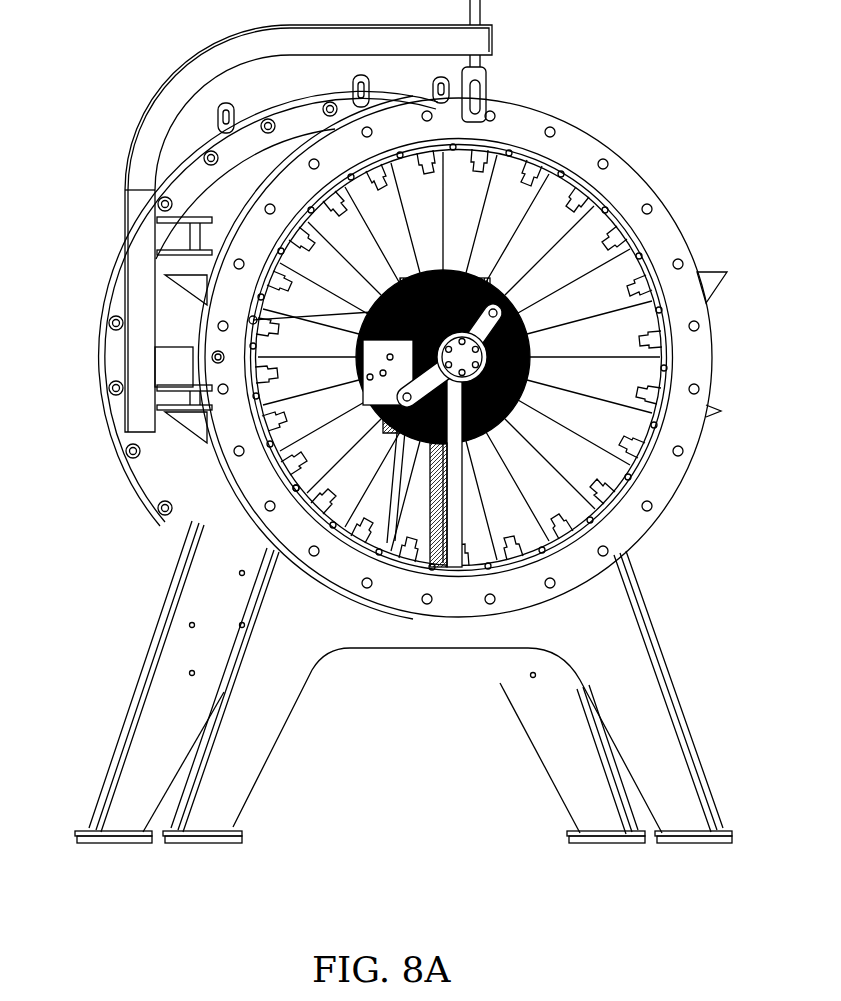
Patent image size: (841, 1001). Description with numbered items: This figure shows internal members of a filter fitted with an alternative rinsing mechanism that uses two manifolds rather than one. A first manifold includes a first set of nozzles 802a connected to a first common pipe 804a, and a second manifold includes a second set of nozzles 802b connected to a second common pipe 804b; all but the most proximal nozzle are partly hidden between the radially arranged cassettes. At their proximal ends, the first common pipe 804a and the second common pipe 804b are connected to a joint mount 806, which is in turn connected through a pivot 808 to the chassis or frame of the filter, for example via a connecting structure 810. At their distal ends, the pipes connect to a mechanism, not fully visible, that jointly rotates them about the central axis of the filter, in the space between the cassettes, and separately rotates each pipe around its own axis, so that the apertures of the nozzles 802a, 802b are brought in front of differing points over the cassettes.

The first set of nozzles 802a is at (467, 305).
The second set of nozzles 802b is at (381, 428).
The first common pipe 804a is at (250, 319).
The second common pipe 804b is at (290, 468).
The joint mount 806 is at (505, 316).
The pivot 808 is at (212, 356).
The connecting structure 810 is at (462, 475).